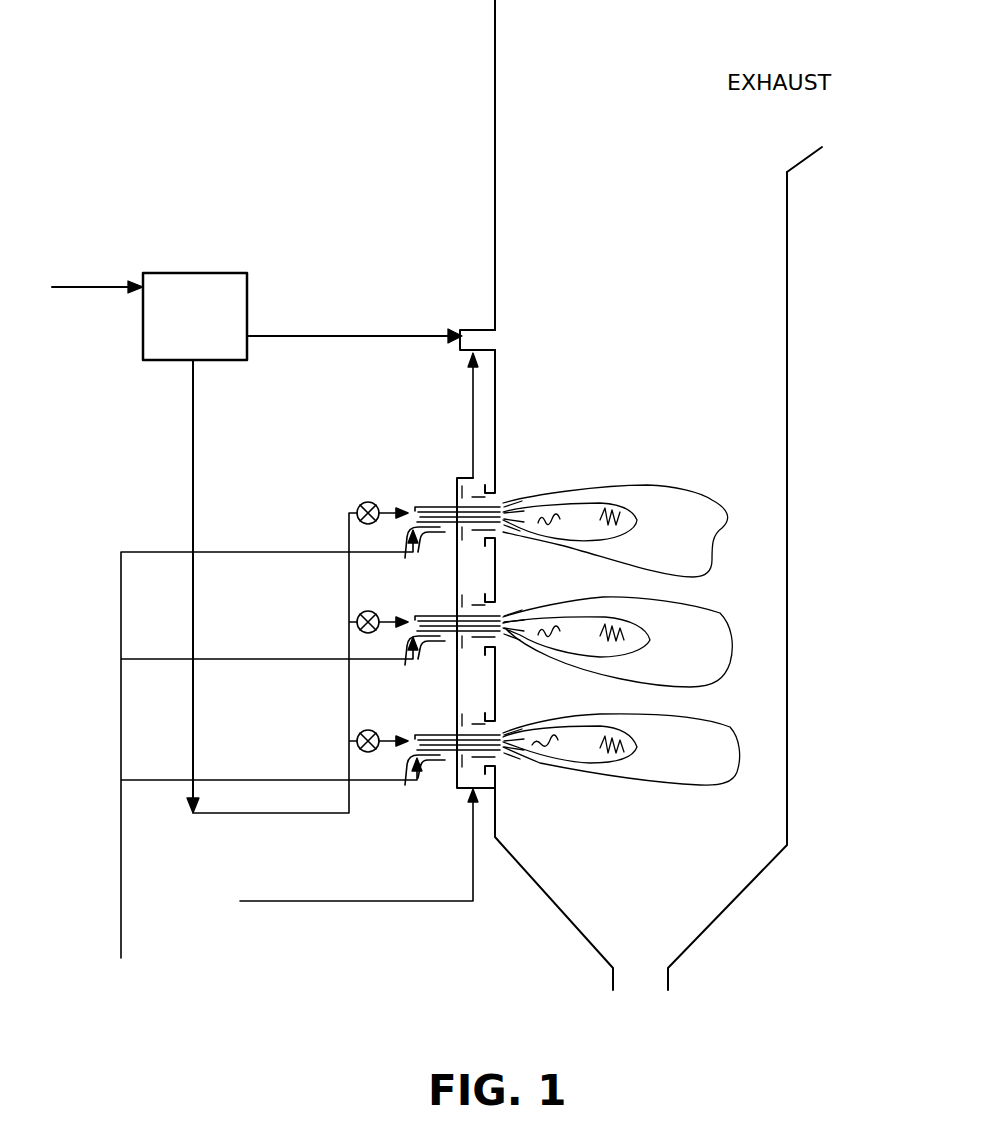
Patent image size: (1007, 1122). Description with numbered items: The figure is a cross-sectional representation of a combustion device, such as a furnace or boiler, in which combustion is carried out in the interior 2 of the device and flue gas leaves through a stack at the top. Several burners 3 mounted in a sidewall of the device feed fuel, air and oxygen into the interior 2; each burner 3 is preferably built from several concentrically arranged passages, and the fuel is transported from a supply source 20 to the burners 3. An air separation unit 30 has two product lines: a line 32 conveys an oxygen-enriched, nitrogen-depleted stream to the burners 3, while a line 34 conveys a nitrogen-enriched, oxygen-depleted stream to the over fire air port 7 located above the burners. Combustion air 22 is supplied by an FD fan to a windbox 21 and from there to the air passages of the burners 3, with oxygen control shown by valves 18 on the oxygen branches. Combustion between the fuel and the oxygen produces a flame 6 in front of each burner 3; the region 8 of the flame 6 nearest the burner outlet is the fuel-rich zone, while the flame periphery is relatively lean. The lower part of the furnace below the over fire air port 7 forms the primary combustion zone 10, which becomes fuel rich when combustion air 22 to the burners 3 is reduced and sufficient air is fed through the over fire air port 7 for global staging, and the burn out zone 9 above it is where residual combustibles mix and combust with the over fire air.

The interior 2 is at (537, 442).
The burner 3 is at (457, 505).
The flame 6 is at (697, 540).
The over fire air port 7 is at (480, 330).
The region of the flame 8 is at (591, 534).
The burn out zone 9 is at (655, 293).
The primary combustion zone 10 is at (744, 458).
The oxygen valve 18 is at (368, 501).
The supply source 20 is at (265, 756).
The windbox 21 is at (457, 677).
The combustion air 22 is at (359, 639).
The air separation unit 30 is at (149, 311).
The line 32 is at (201, 455).
The line 34 is at (363, 326).